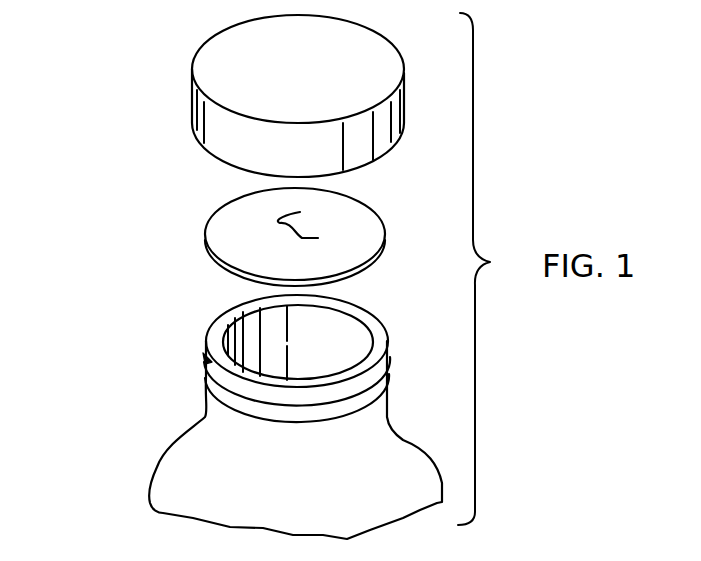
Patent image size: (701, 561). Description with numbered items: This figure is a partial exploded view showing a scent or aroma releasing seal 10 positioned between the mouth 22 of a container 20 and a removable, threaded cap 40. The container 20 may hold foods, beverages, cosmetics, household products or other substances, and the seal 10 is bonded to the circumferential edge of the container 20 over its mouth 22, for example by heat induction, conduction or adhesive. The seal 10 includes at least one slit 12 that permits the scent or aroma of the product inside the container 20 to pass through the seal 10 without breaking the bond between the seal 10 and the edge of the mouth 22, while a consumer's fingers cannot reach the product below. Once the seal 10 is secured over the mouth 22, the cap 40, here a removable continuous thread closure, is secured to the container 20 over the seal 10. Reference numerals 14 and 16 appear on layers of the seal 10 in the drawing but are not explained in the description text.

The cap 40 is at (193, 62).
The scent or aroma releasing seal 10 is at (241, 244).
The liner disc 14 is at (223, 232).
The liner backing layer 16 is at (233, 275).
The slit 12 is at (300, 212).
The container 20 is at (236, 408).
The mouth 22 is at (333, 348).